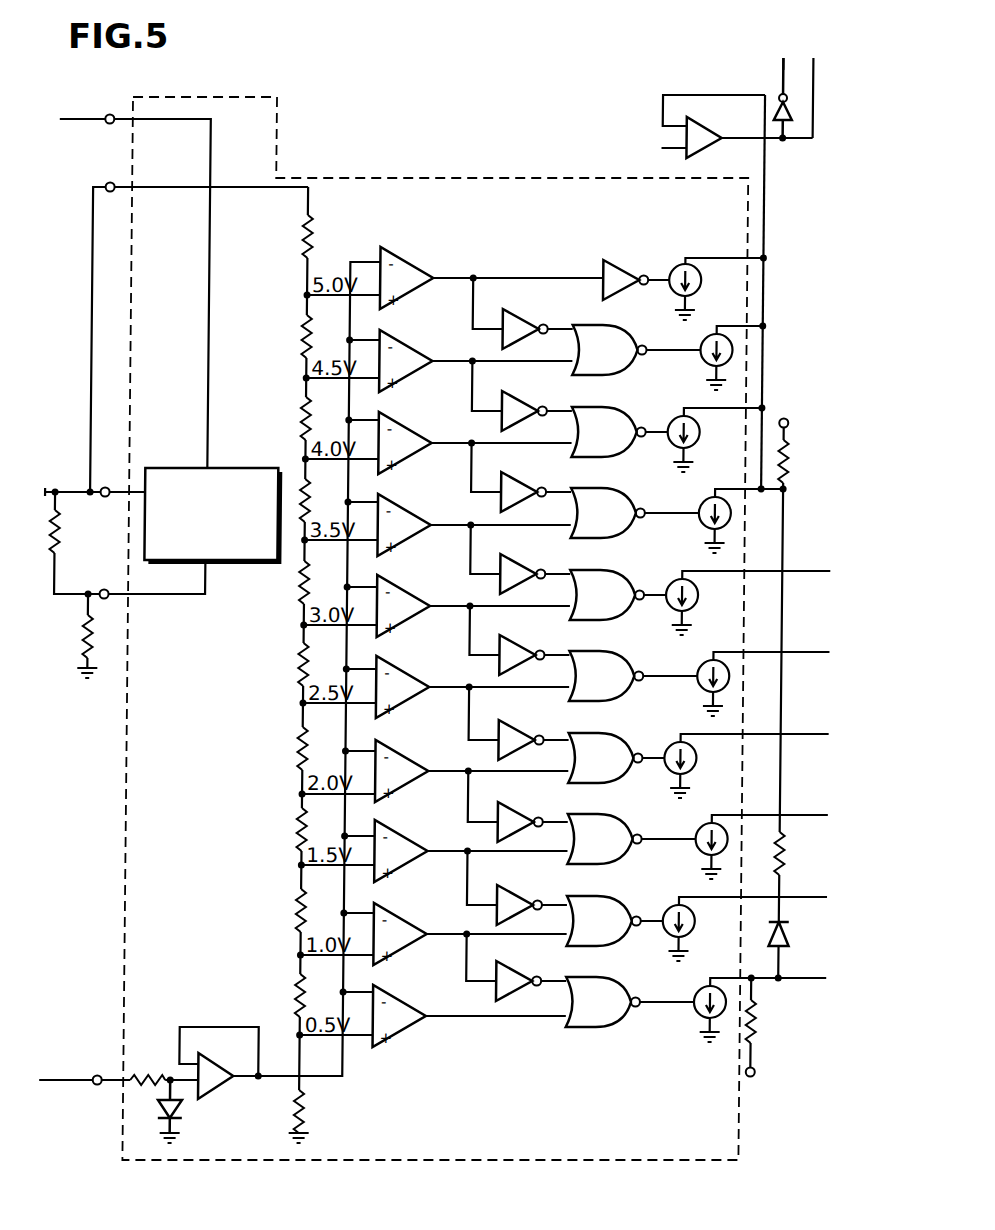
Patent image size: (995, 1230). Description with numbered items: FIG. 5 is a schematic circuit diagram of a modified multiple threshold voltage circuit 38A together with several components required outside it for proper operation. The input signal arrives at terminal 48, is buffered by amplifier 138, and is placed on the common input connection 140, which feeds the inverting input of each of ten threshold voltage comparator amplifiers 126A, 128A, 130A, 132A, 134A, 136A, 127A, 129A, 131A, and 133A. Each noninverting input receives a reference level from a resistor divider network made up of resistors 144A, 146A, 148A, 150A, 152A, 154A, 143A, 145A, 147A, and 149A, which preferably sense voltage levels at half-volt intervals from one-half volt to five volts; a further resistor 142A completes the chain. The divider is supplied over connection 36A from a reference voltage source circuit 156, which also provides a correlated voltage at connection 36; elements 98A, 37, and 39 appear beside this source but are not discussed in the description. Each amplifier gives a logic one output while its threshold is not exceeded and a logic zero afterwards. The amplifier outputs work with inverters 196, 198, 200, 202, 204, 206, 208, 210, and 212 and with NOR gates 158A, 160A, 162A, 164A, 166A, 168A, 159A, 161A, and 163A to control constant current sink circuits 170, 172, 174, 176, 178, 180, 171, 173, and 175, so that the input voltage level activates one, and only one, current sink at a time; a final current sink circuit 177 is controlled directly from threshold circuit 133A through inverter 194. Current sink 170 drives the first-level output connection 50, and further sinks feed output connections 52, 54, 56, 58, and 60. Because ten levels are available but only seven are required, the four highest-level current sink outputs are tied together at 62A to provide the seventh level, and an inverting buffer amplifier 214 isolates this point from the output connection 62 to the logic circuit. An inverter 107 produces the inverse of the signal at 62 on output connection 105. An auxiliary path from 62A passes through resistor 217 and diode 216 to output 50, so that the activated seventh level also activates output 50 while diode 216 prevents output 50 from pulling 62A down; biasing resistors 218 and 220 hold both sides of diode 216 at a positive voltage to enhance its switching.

The multiple threshold voltage circuit 38A is at (408, 178).
The input line 98A is at (105, 124).
The connection 36A is at (89, 230).
The connection 36 is at (46, 492).
The resistor 37 is at (58, 552).
The resistor 39 is at (82, 650).
The reference voltage source circuit 156 is at (178, 468).
The reference voltage divider resistor 149A is at (302, 246).
The reference voltage divider resistor 147A is at (302, 340).
The reference voltage divider resistor 145A is at (302, 423).
The reference voltage divider resistor 143A is at (301, 490).
The reference voltage divider resistor 154A is at (303, 572).
The reference voltage divider resistor 152A is at (300, 668).
The reference voltage divider resistor 150A is at (300, 750).
The reference voltage divider resistor 148A is at (300, 832).
The reference voltage divider resistor 146A is at (300, 914).
The reference voltage divider resistor 144A is at (300, 996).
The resistor 142A is at (310, 1112).
The common input connection 140 is at (350, 1076).
The threshold voltage comparator amplifier 133A is at (404, 262).
The threshold voltage comparator amplifier 131A is at (382, 347).
The threshold voltage comparator amplifier 129A is at (382, 429).
The threshold voltage comparator amplifier 127A is at (382, 511).
The threshold voltage comparator amplifier 136A is at (382, 593).
The threshold voltage comparator amplifier 134A is at (382, 675).
The threshold voltage comparator amplifier 132A is at (382, 757).
The threshold voltage comparator amplifier 130A is at (382, 839).
The threshold voltage comparator amplifier 128A is at (382, 921).
The threshold voltage comparator amplifier 126A is at (382, 1003).
The inverter 194 is at (620, 264).
The inverter 212 is at (516, 335).
The inverter 210 is at (516, 417).
The inverter 208 is at (516, 498).
The inverter 206 is at (516, 580).
The inverter 204 is at (516, 661).
The inverter 202 is at (516, 745).
The inverter 200 is at (516, 827).
The inverter 198 is at (516, 910).
The inverter 196 is at (516, 987).
The NOR gate 163A is at (593, 338).
The NOR gate 161A is at (593, 420).
The NOR gate 159A is at (593, 501).
The NOR gate 168A is at (593, 583).
The NOR gate 166A is at (593, 664).
The NOR gate 164A is at (593, 746).
The NOR gate 162A is at (593, 827).
The NOR gate 160A is at (593, 909).
The NOR gate 158A is at (593, 990).
The constant current sink circuit 177 is at (671, 268).
The constant current sink circuit 175 is at (702, 356).
The constant current sink circuit 173 is at (669, 422).
The constant current sink circuit 171 is at (702, 524).
The constant current sink circuit 180 is at (667, 584).
The constant current sink circuit 178 is at (702, 686).
The constant current sink circuit 176 is at (668, 748).
The constant current sink circuit 174 is at (700, 848).
The constant current sink circuit 172 is at (668, 910).
The constant current sink circuit 170 is at (700, 1011).
The output line 60 is at (786, 572).
The output line 58 is at (788, 652).
The output line 56 is at (820, 722).
The output line 54 is at (820, 804).
The output line 52 is at (820, 882).
The output connection 50 is at (822, 972).
The output connection 62A is at (762, 284).
The output connection 62 is at (798, 140).
The resistor 220 is at (800, 472).
The resistor 217 is at (822, 852).
The diode 216 is at (824, 928).
The resistor 218 is at (780, 1034).
The inverting buffer amplifier 214 is at (695, 124).
The inverter 107 is at (776, 108).
The output connection 105 is at (778, 70).
The input terminal 48 is at (74, 1080).
The buffer amplifier 138 is at (248, 1047).